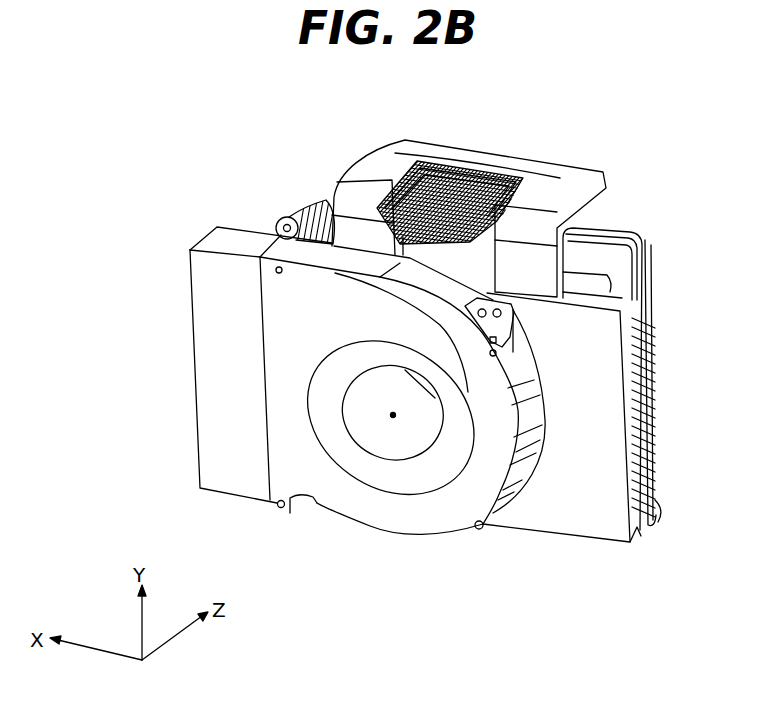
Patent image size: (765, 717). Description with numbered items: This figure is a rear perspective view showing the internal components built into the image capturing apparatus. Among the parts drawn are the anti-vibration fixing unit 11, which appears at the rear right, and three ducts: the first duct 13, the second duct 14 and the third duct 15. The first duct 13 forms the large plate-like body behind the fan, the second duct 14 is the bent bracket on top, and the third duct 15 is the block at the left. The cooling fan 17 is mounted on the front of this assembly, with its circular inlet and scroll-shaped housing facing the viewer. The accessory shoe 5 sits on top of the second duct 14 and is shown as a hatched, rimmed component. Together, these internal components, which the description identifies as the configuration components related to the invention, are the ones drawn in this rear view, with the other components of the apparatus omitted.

The accessory shoe 5 is at (478, 178).
The anti-vibration fixing unit 11 is at (607, 252).
The first duct 13 is at (560, 520).
The second duct 14 is at (403, 154).
The third duct 15 is at (223, 238).
The cooling fan 17 is at (341, 488).